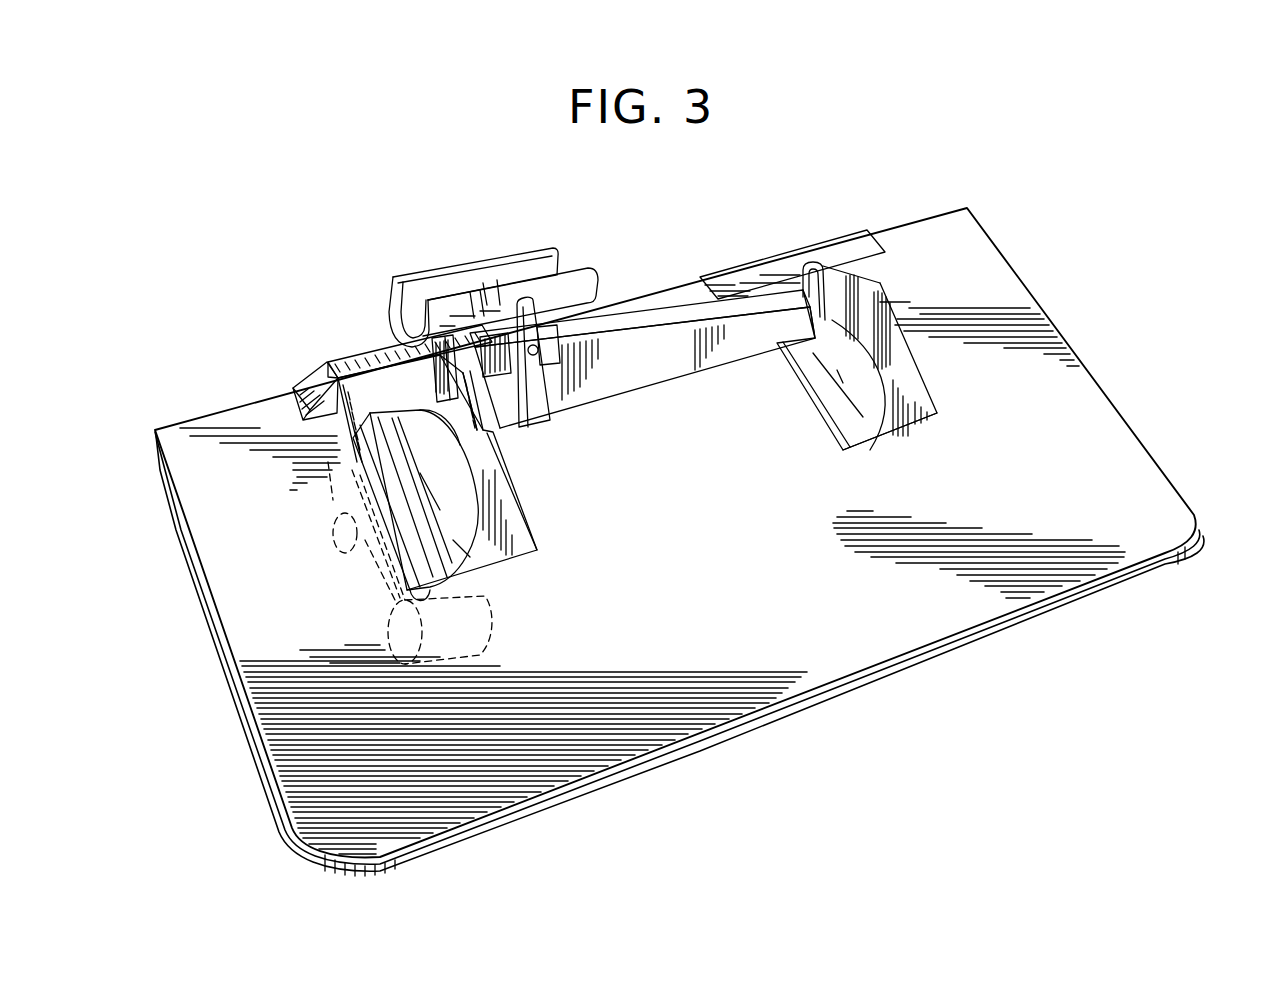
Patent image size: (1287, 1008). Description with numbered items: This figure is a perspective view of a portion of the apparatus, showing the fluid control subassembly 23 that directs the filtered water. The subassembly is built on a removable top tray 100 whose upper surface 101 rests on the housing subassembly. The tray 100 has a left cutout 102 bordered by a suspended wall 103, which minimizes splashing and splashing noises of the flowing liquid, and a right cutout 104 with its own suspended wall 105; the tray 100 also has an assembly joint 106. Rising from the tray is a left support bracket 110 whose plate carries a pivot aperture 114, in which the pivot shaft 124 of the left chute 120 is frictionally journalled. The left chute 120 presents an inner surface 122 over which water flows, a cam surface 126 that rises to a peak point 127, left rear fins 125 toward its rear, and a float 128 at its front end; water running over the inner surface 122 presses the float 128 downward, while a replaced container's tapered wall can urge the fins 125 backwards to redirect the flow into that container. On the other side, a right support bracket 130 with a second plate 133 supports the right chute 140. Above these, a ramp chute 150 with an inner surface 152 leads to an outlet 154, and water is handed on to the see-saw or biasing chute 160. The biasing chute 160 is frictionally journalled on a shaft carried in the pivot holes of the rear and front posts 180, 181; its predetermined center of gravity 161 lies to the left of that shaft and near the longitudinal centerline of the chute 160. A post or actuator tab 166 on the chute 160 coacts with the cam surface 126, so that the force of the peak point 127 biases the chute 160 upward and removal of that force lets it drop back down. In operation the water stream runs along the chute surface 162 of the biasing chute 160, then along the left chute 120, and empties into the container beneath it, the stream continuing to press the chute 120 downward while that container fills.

The fluid control subassembly 23 is at (733, 230).
The removable top tray 100 is at (268, 802).
The upper surface 101 is at (718, 705).
The left cutout 102 is at (485, 557).
The suspended wall 103 is at (520, 538).
The right cutout 104 is at (925, 408).
The suspended wall 105 is at (915, 422).
The assembly joint 106 is at (1040, 617).
The left support bracket 110 is at (343, 363).
The pivot aperture 114 is at (337, 515).
The left chute 120 is at (462, 568).
The inner surface 122 is at (448, 543).
The pivot shaft 124 is at (330, 540).
The left rear fins 125 is at (378, 548).
The cam surface 126 is at (473, 482).
The peak point 127 is at (482, 428).
The float 128 is at (462, 668).
The right support bracket 130 is at (853, 245).
The second plate 133 is at (805, 322).
The right chute 140 is at (870, 413).
The ramp chute 150 is at (660, 290).
The inner surface 152 is at (612, 325).
The outlet 154 is at (827, 320).
The see-saw or biasing chute 160 is at (520, 250).
The center of gravity 161 is at (510, 307).
The chute surface 162 is at (498, 305).
The post or actuator tab 166 is at (420, 413).
The rear post 180 is at (497, 393).
The front post 181 is at (533, 413).